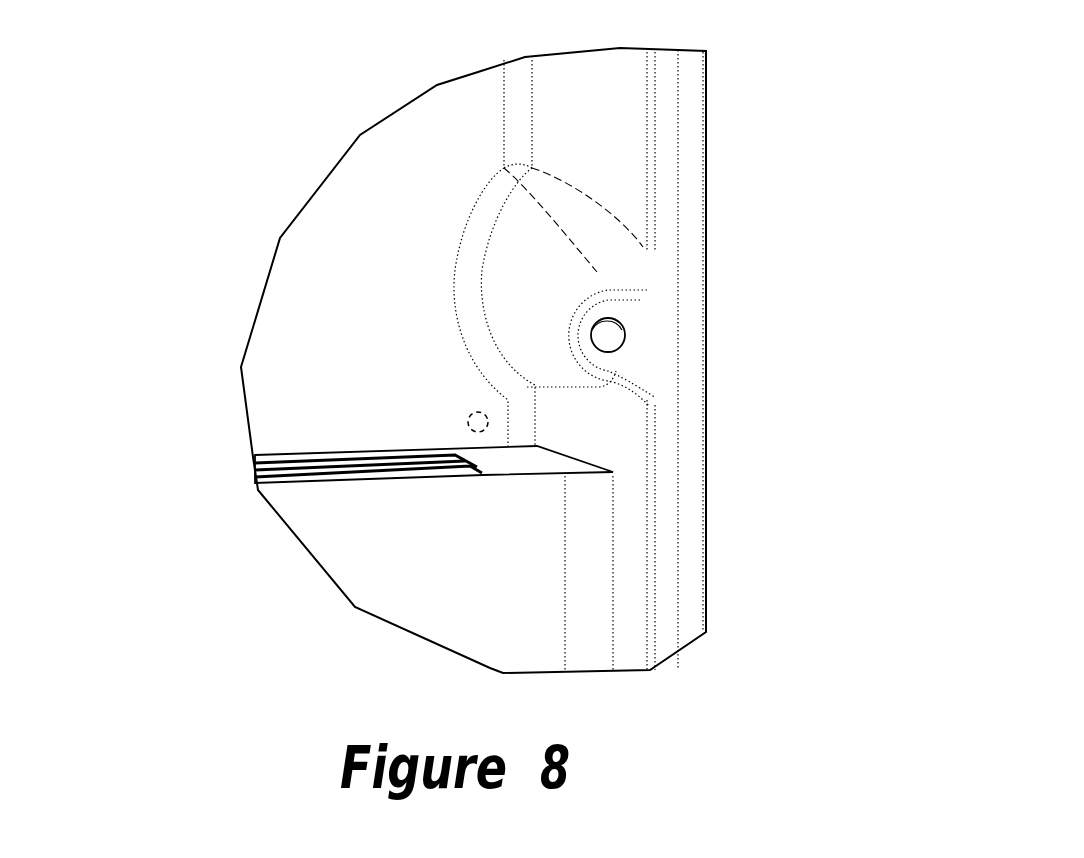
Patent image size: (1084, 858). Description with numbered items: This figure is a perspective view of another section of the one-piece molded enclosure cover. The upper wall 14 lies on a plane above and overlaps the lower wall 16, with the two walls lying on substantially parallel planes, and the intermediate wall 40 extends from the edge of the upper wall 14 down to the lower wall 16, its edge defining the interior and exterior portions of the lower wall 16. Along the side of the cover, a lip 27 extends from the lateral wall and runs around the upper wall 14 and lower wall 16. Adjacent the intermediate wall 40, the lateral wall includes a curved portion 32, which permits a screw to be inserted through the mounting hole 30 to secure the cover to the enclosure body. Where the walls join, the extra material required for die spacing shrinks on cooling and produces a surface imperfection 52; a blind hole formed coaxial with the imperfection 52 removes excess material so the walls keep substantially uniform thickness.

The upper wall 14 is at (273, 292).
The lower wall 16 is at (490, 595).
The lip 27 is at (692, 520).
The mounting hole 30 is at (612, 330).
The curved portion 32 is at (578, 277).
The intermediate wall 40 is at (537, 462).
The surface imperfection 52 is at (490, 422).